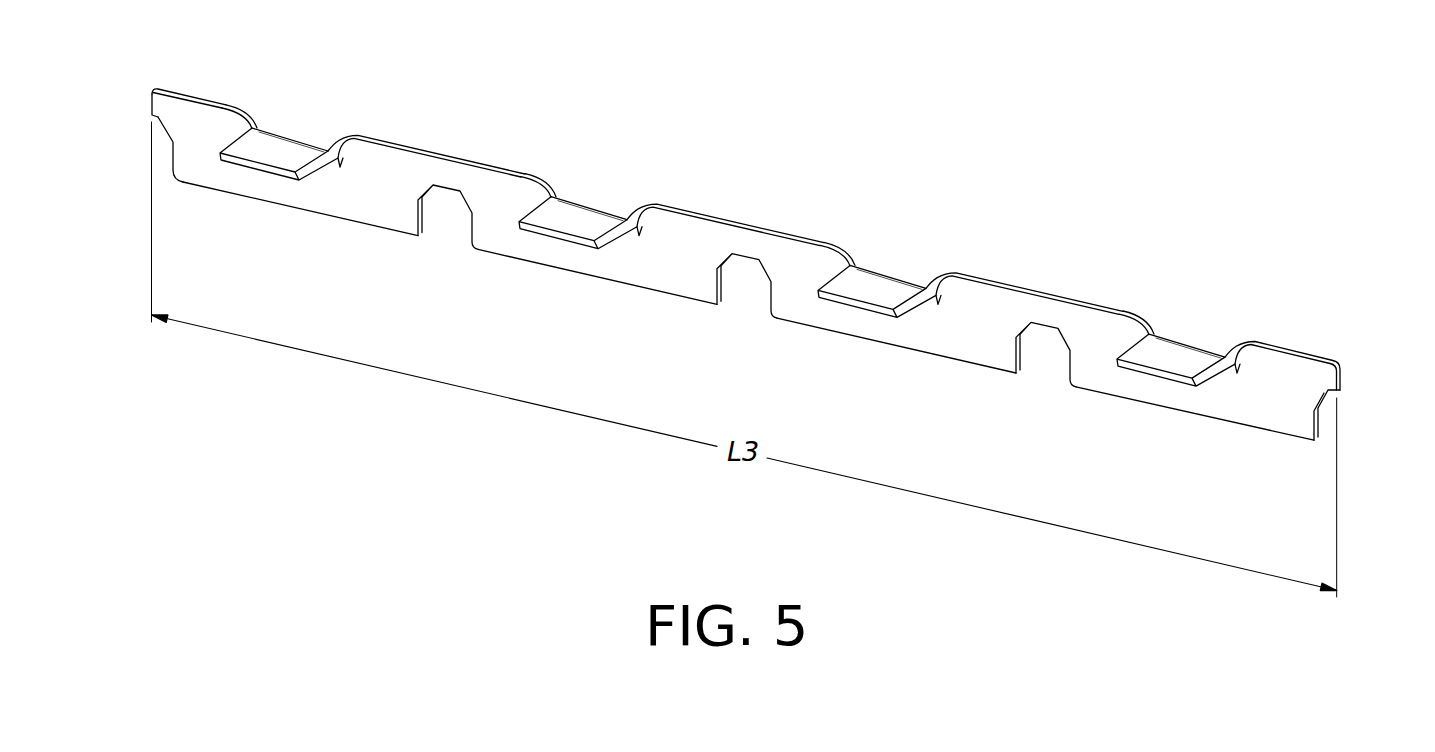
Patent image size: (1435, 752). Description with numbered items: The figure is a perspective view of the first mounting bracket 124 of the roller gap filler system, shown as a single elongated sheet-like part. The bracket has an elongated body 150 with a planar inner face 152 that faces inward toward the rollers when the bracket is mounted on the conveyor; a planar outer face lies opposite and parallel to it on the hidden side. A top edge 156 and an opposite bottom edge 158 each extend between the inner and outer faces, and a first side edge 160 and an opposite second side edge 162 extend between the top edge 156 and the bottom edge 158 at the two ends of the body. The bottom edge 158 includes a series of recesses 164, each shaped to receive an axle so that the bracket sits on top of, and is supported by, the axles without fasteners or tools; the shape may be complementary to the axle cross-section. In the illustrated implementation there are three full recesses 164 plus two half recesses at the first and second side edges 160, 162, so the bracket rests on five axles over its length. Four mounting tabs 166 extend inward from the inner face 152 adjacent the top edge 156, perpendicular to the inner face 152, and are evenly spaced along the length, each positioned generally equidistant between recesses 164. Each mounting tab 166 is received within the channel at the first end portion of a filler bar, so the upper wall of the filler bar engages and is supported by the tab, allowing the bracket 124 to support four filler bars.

The first mounting bracket 124 is at (813, 135).
The elongated body 150 is at (1024, 239).
The planar inner face 152 is at (697, 238).
The top edge 156 is at (1035, 277).
The bottom edge 158 is at (896, 369).
The first side edge 160 is at (1342, 380).
The second side edge 162 is at (152, 106).
The recess 164 is at (158, 155).
The mounting tab 166 is at (280, 148).